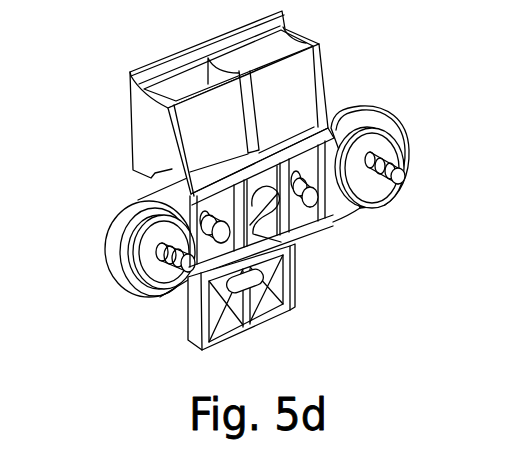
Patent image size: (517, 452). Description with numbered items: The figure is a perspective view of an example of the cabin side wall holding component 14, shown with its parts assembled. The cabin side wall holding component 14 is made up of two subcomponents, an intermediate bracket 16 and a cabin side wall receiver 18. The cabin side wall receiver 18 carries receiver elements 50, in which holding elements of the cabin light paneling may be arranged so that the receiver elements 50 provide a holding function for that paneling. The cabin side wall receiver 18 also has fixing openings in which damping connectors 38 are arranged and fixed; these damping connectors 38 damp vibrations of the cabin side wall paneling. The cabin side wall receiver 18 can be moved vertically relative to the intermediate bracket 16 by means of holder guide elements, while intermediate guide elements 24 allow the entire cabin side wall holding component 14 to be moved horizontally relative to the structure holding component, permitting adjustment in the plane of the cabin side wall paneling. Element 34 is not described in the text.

The cabin side wall holding component 14 is at (434, 282).
The intermediate bracket 16 is at (285, 261).
The cabin side wall receiver 18 is at (348, 113).
The intermediate guide elements 24 is at (252, 315).
The mounting pin 34 is at (205, 215).
The damping connectors 38 is at (389, 151).
The receiver elements 50 is at (147, 113).